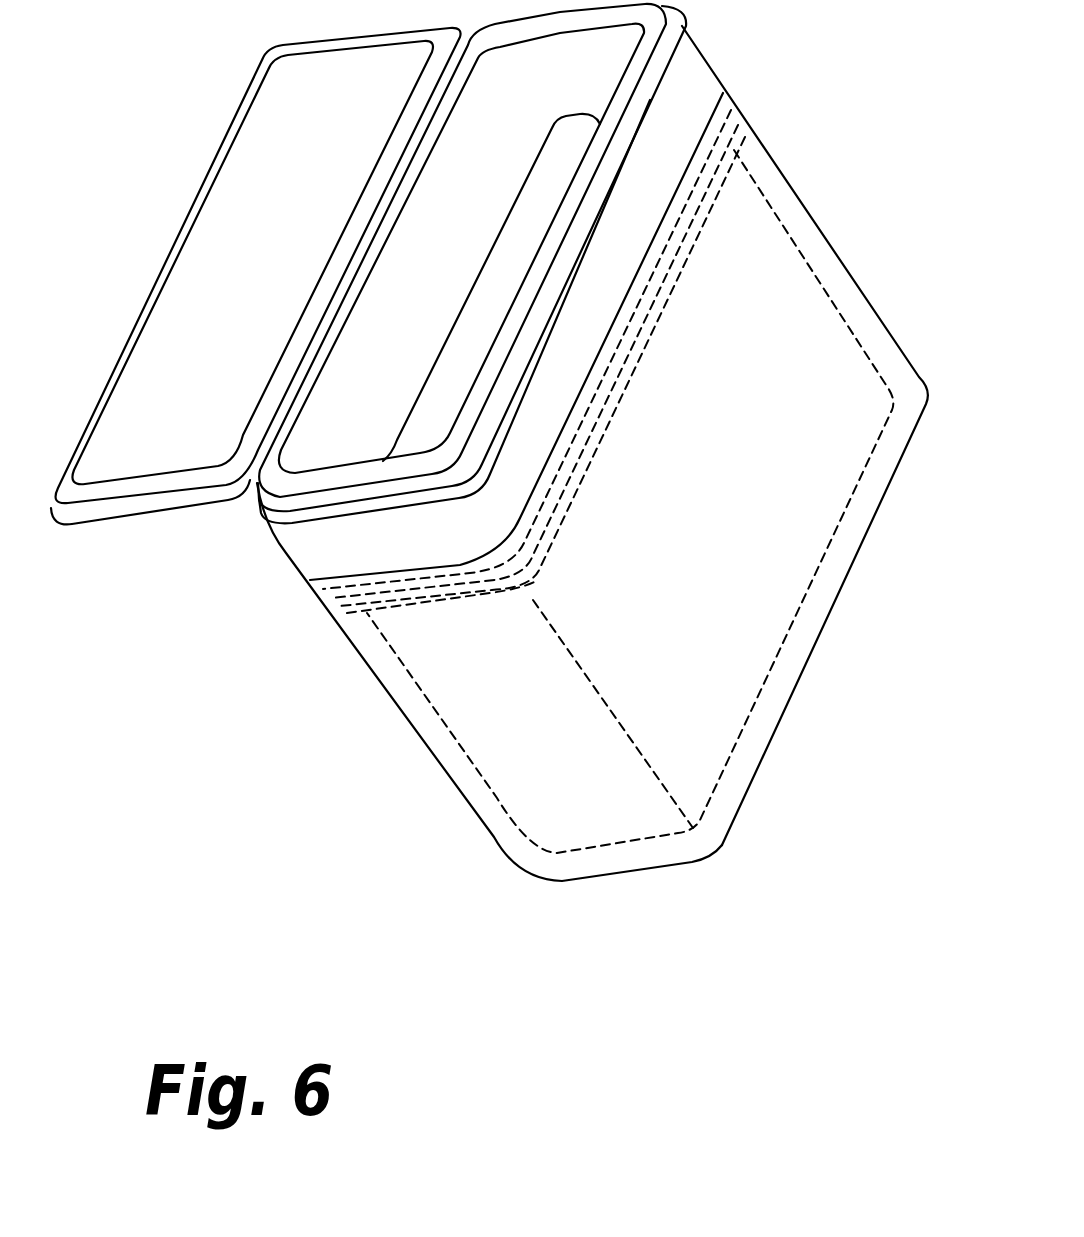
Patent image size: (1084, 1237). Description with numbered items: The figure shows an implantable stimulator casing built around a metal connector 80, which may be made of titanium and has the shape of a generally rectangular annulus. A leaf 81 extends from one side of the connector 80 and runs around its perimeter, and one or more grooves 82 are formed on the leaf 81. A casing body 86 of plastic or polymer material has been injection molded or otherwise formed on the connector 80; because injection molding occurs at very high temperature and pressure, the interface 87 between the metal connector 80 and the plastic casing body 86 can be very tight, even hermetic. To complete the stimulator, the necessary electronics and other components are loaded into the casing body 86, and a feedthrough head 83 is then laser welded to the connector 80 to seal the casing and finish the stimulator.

The connector 80 is at (297, 562).
The leaf 81 is at (367, 613).
The grooves 82 is at (418, 608).
The feedthrough head 83 is at (251, 294).
The casing body 86 is at (766, 275).
The interface 87 is at (470, 600).